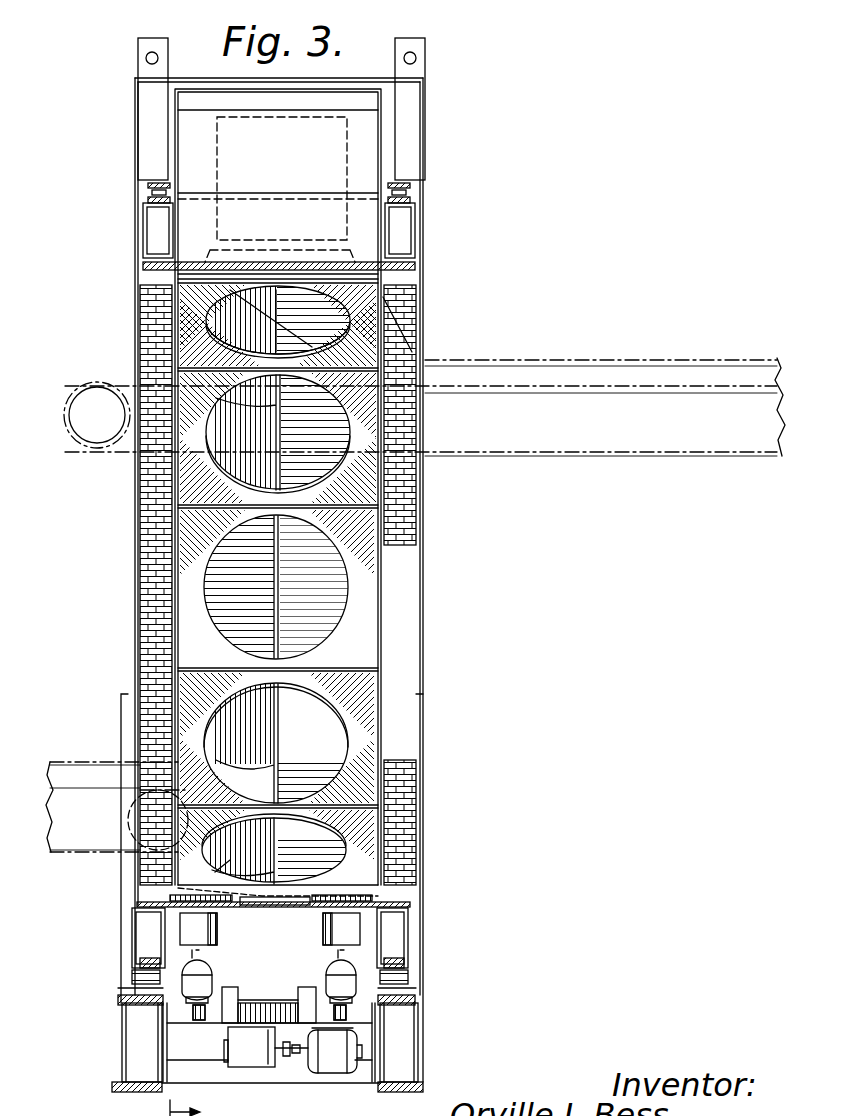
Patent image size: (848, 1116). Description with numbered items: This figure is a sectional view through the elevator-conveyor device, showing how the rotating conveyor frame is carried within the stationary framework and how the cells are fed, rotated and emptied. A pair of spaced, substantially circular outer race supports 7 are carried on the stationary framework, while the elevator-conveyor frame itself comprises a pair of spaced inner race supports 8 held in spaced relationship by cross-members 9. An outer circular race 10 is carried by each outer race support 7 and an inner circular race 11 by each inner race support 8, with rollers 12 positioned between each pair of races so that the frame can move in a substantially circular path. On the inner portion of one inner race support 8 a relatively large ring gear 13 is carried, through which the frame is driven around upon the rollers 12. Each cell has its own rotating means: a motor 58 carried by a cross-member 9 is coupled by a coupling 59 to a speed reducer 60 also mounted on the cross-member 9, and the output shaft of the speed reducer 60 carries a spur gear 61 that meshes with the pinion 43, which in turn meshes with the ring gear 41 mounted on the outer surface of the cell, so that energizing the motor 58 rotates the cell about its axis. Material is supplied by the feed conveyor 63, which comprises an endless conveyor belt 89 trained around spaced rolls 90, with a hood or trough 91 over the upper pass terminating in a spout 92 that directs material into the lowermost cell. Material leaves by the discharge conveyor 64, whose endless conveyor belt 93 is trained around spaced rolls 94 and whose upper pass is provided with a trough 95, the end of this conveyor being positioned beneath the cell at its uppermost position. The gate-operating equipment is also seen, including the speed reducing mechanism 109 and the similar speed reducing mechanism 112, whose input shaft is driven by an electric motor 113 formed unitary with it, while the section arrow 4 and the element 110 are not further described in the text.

The section line 4- 4 is at (193, 1107).
The outer race support 7 is at (122, 1042).
The inner race support 8 is at (132, 933).
The cross-member 9 is at (220, 1024).
The outer circular race 10 is at (120, 1010).
The inner circular race 11 is at (147, 970).
The rollers 12 is at (132, 977).
The ring gear 13 is at (150, 286).
The ring gear 41 is at (287, 1003).
The pinion 43 is at (273, 1003).
The motor 58 is at (318, 1072).
The coupling 59 is at (295, 1057).
The speed reducer 60 is at (240, 1056).
The spur gear 61 is at (253, 1003).
The feed conveyor 63 is at (89, 752).
The discharge conveyor 64 is at (528, 352).
The endless conveyor belt 89 is at (71, 856).
The roll 90 is at (147, 775).
The hood or trough 91 is at (63, 758).
The spout 92 is at (257, 908).
The endless conveyor belt 93 is at (515, 458).
The roll 94 is at (118, 446).
The trough 95 is at (492, 358).
The speed reducing mechanism 109 is at (207, 931).
The valve 110 is at (208, 1001).
The speed reducing mechanism 112 is at (327, 931).
The electric motor 113 is at (350, 1000).